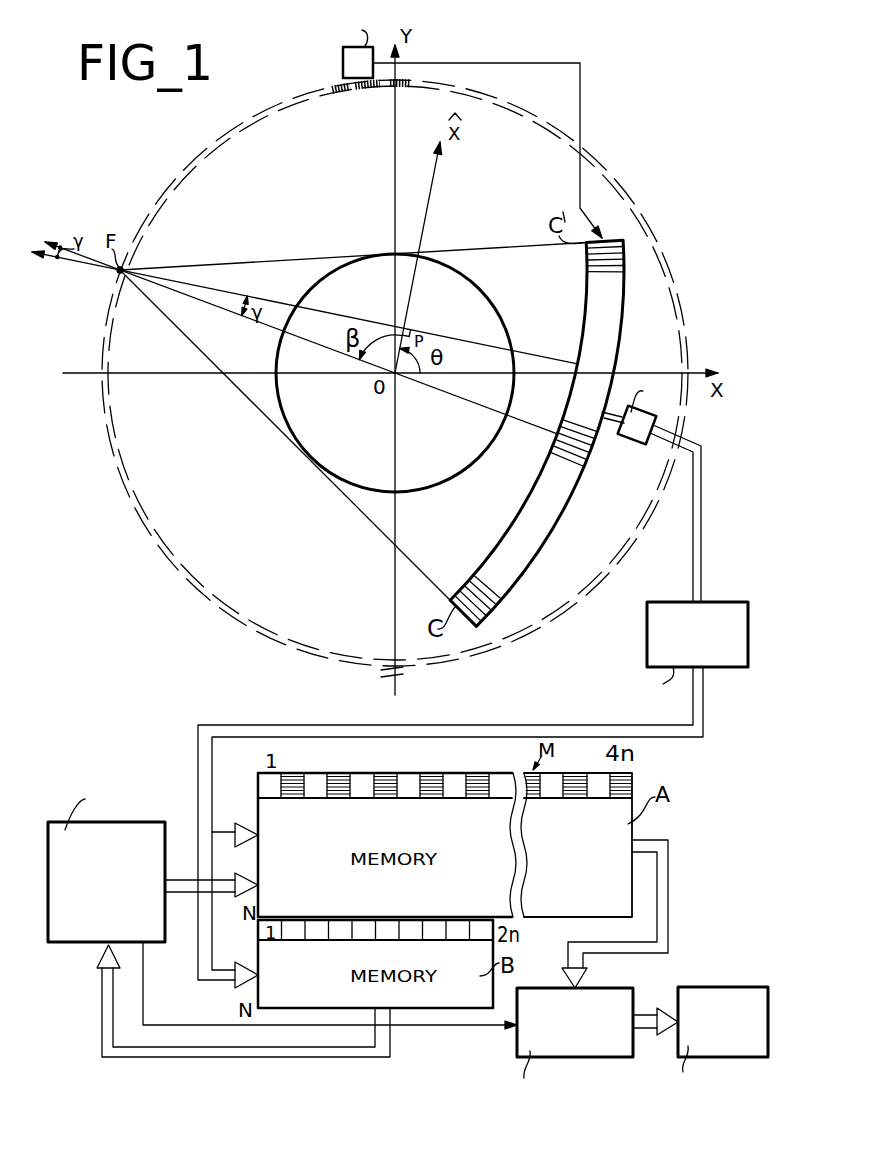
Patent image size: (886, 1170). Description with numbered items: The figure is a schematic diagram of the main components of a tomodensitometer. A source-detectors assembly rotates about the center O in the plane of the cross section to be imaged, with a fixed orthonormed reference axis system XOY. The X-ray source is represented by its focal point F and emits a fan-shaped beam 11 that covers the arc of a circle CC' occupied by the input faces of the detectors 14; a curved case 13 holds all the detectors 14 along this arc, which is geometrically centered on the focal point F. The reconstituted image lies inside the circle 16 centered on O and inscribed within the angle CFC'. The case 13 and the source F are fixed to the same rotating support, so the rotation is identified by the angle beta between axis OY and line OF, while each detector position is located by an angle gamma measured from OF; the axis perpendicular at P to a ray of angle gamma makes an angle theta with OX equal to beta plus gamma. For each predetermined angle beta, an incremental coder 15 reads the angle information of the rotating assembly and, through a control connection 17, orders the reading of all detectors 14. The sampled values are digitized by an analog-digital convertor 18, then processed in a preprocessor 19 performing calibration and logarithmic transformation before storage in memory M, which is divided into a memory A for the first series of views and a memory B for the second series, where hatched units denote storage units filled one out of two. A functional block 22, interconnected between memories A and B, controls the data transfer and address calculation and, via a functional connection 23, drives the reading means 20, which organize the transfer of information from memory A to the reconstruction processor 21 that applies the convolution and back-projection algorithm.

The fan-shaped beam 11 is at (292, 257).
The case 13 is at (563, 526).
The detectors 14 is at (496, 606).
The incremental coder 15 is at (332, 76).
The circle 16 is at (484, 452).
The control connection 17 is at (580, 108).
The analog-digital convertor 18 is at (641, 443).
The preprocessor 19 is at (647, 633).
The reading means 20 is at (575, 1051).
The processor 21 is at (708, 1050).
The functional block 22 is at (122, 847).
The functional connection 23 is at (463, 1025).